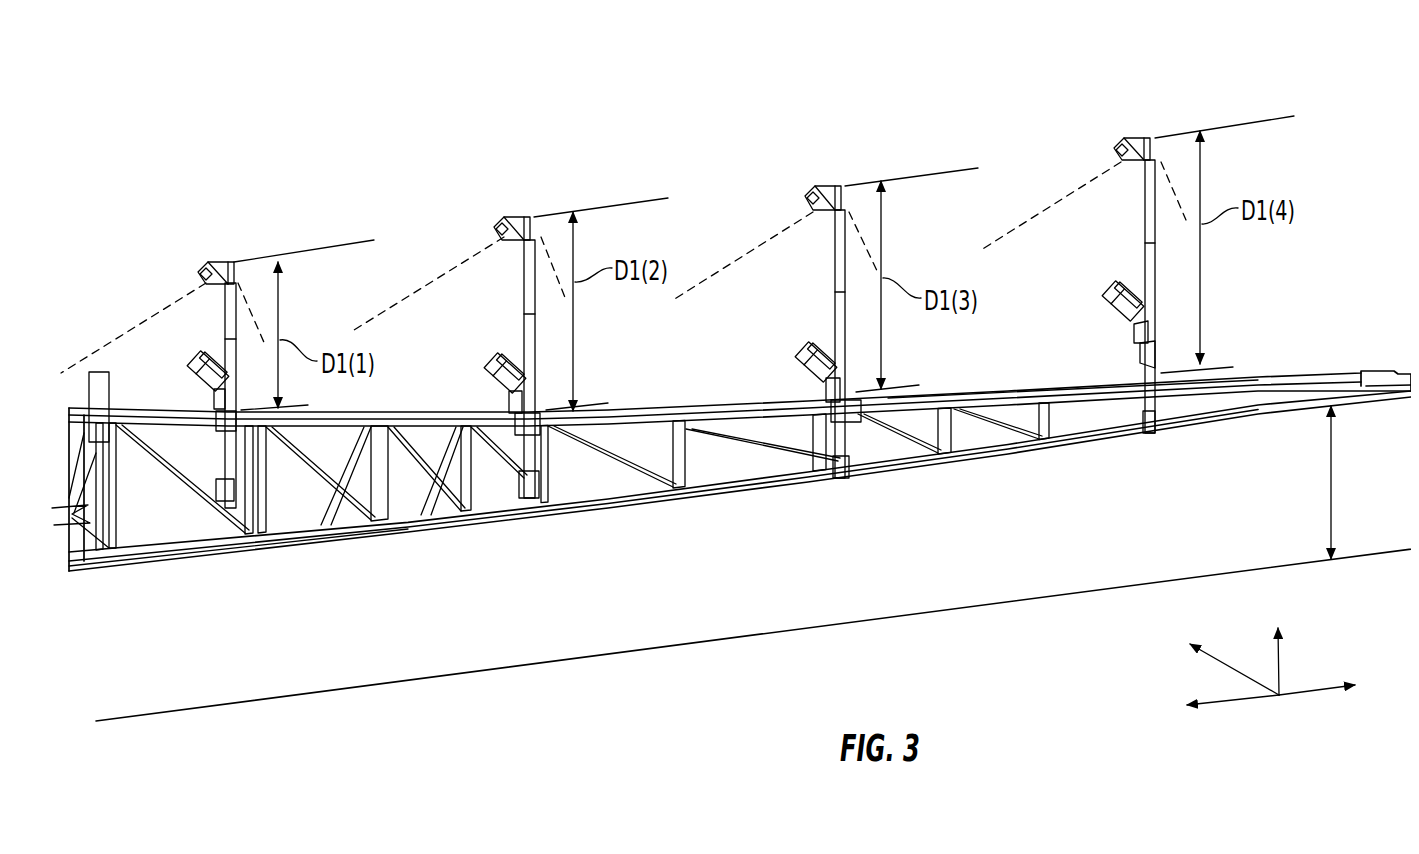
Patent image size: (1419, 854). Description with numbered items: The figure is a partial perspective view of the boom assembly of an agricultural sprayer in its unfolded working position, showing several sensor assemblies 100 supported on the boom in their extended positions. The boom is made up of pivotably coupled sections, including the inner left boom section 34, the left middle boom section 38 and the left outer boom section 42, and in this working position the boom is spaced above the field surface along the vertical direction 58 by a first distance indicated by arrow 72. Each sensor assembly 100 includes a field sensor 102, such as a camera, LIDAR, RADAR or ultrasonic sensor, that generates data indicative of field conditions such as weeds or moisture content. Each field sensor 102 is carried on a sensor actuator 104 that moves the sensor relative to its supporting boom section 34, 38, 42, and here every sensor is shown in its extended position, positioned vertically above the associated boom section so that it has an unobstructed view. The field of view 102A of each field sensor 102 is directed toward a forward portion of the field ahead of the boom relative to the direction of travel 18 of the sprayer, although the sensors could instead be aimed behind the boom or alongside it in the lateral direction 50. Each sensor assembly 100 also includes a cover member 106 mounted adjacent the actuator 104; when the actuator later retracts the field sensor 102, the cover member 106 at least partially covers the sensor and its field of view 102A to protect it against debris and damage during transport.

The direction of travel 18 is at (1227, 656).
The inner left boom section 34 is at (180, 542).
The left middle boom section 38 is at (703, 484).
The left outer boom section 42 is at (1014, 441).
The lateral direction 50 is at (1307, 684).
The vertical direction 58 is at (1274, 652).
The first distance 72 is at (1324, 466).
The sensor assembly 100 is at (623, 272).
The field sensor 102 is at (198, 260).
The field of view 102A is at (111, 329).
The sensor actuator 104 is at (217, 307).
The cover member 106 is at (192, 372).